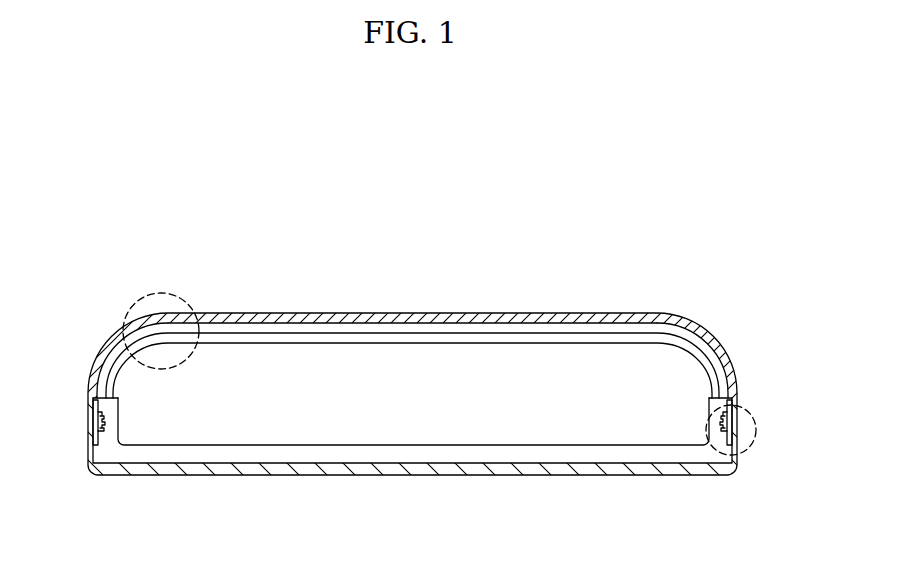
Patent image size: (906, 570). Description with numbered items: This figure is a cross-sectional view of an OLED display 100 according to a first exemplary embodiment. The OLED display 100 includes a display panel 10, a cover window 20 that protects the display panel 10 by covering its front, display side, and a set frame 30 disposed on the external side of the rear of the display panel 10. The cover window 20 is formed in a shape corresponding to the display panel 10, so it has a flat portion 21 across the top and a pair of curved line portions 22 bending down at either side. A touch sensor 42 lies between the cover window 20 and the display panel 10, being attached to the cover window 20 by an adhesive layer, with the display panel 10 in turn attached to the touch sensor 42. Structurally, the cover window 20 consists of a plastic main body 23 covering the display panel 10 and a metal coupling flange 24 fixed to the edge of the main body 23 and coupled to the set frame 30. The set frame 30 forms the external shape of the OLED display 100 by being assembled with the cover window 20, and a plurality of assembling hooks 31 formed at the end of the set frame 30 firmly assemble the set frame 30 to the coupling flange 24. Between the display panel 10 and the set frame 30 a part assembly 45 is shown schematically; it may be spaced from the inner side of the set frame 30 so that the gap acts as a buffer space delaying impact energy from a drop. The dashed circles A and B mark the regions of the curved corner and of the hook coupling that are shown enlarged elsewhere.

The OLED display 100 is at (388, 210).
The display panel 10 is at (585, 340).
The cover window 20 is at (90, 355).
The flat portion 21 is at (469, 315).
The curved line portions 22 is at (120, 336).
The main body 23 is at (326, 320).
The coupling flange 24 is at (94, 411).
The set frame 30 is at (295, 470).
The assembling hooks 31 is at (102, 430).
The touch sensor 42 is at (545, 328).
The part assembly 45 is at (468, 422).
The detail region A is at (163, 293).
The detail region B is at (748, 450).